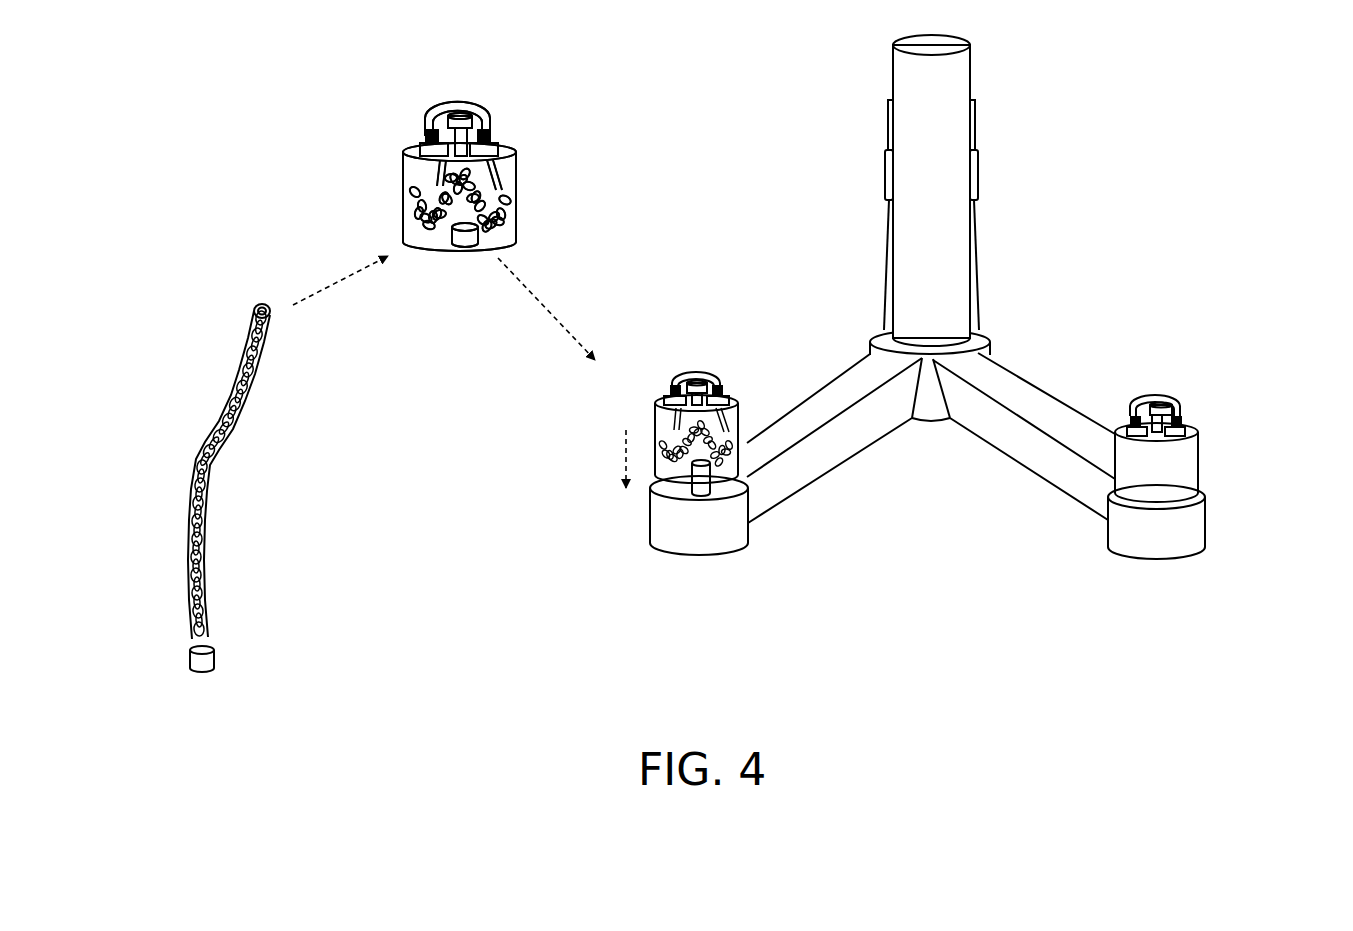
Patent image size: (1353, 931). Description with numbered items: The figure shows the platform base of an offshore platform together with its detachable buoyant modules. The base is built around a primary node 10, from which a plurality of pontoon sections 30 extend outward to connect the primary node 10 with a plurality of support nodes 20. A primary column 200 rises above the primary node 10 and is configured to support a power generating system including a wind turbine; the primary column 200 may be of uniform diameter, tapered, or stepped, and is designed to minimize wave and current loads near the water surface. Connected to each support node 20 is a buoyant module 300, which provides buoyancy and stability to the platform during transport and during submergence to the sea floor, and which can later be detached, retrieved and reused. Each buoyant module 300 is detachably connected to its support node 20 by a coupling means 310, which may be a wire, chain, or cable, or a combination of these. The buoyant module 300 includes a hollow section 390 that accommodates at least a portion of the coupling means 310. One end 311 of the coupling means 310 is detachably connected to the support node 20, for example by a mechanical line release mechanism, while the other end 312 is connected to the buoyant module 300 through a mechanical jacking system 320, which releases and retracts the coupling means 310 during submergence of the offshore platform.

The primary node 10 is at (990, 340).
The support node 20 is at (1206, 525).
The pontoon section 30 is at (990, 443).
The primary column 200 is at (970, 80).
The buoyant module 300 is at (516, 193).
The coupling means 310 is at (436, 214).
The one end of the coupling means 311 is at (195, 651).
The other end of the coupling means 312 is at (257, 306).
The mechanical jacking system 320 is at (470, 100).
The hollow section 390 is at (403, 228).